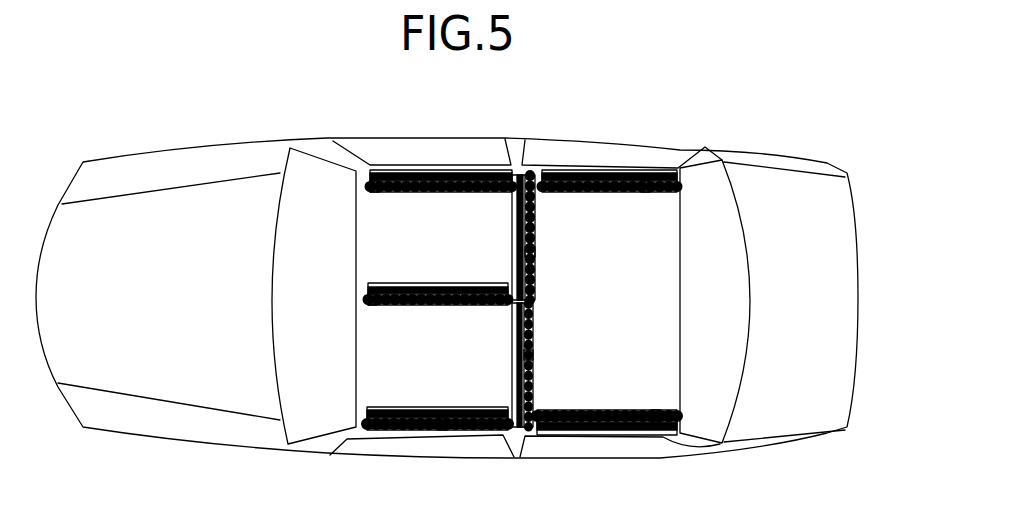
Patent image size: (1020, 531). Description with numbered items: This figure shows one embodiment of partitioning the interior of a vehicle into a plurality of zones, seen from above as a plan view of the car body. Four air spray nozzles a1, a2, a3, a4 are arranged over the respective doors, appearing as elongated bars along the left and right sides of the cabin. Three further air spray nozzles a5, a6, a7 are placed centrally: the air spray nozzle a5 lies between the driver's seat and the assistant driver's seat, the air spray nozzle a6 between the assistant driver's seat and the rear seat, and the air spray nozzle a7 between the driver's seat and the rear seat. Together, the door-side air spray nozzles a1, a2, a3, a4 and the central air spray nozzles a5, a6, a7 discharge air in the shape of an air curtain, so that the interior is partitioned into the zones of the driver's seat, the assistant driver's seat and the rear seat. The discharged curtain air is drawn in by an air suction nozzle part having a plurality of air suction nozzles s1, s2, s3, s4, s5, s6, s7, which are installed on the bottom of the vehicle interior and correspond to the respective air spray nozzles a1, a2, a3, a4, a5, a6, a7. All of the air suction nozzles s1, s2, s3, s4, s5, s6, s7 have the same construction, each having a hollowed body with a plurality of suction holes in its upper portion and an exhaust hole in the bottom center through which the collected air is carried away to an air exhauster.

The air spray nozzle a1 is at (422, 172).
The air spray nozzle a2 is at (607, 172).
The air spray nozzle a3 is at (436, 407).
The air spray nozzle a4 is at (600, 433).
The air spray nozzle a5 is at (435, 284).
The air spray nozzle a6 is at (512, 217).
The air spray nozzle a7 is at (512, 332).
The air suction nozzle s1 is at (377, 193).
The air suction nozzle s2 is at (650, 193).
The air suction nozzle s3 is at (443, 430).
The air suction nozzle s4 is at (655, 417).
The air suction nozzle s5 is at (380, 306).
The air suction nozzle s6 is at (535, 252).
The air suction nozzle s7 is at (532, 357).